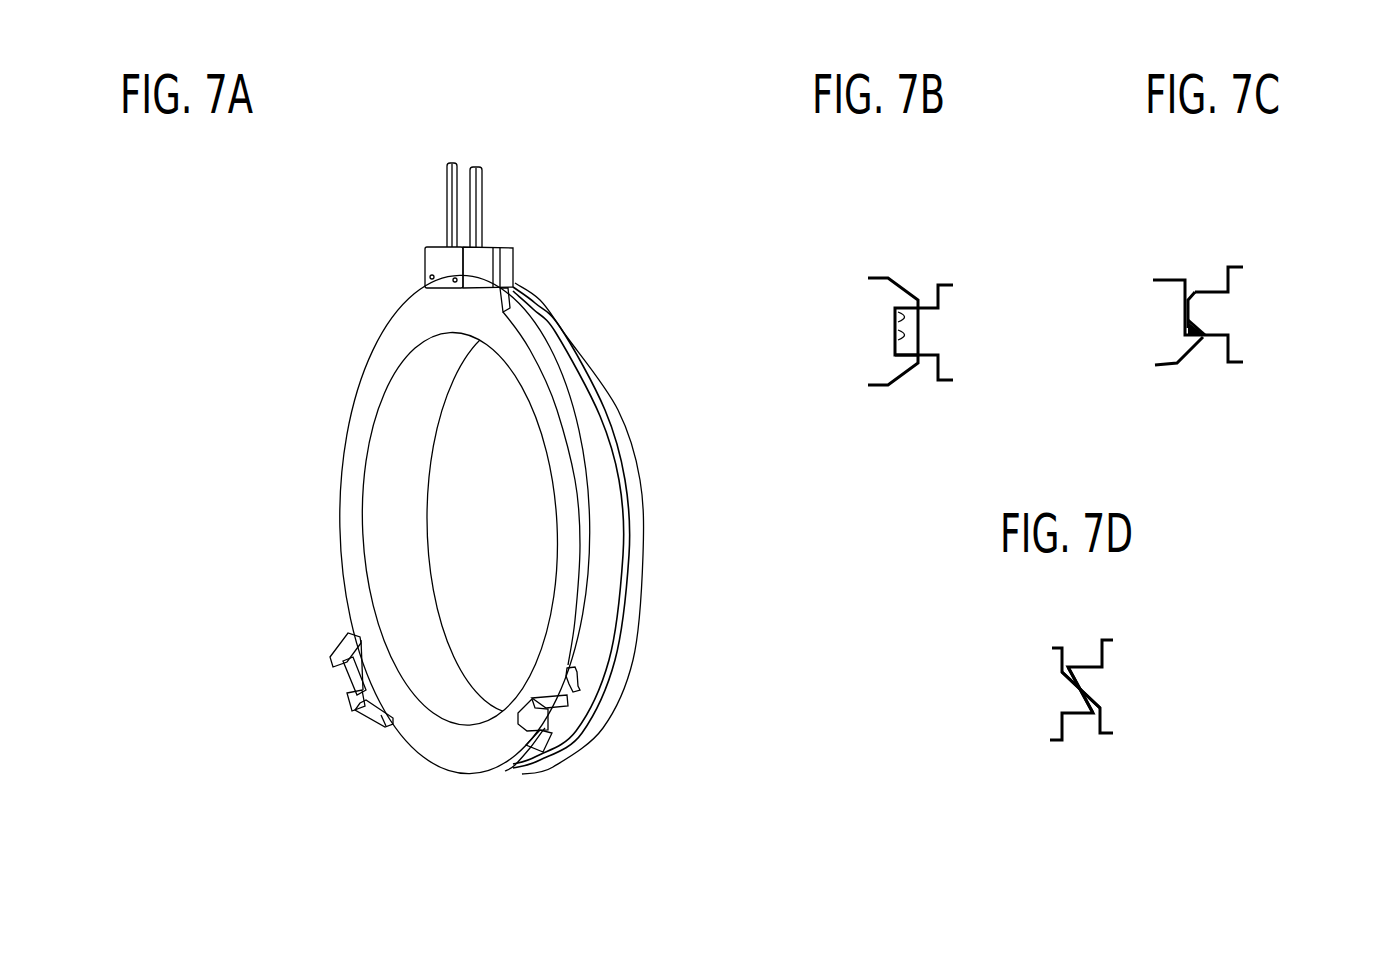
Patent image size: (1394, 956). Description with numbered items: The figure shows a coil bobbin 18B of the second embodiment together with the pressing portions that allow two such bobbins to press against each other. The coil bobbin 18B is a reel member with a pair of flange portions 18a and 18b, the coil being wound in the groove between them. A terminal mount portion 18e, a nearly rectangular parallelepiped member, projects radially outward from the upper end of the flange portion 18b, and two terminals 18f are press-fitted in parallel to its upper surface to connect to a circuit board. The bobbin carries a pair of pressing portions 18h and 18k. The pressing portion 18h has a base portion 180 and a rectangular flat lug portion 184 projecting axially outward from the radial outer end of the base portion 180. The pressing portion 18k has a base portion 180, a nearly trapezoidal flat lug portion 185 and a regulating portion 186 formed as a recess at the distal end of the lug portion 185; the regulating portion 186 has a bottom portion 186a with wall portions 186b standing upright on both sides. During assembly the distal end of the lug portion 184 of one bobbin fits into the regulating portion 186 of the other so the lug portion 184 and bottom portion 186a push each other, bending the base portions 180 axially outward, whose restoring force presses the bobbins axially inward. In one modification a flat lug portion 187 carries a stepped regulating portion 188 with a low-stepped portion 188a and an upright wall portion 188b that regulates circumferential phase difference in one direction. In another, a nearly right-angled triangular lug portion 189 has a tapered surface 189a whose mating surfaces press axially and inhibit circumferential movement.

In FIG. 7A, the coil bobbin 18B is at (354, 268).
In FIG. 7A, the flange portion 18b is at (377, 368).
In FIG. 7A, the flange portion 18a is at (622, 425).
In FIG. 7A, the terminal mount portion 18e is at (478, 270).
In FIG. 7A, the terminal 18f is at (483, 222).
In FIG. 7A, the pressing portion 18k is at (197, 597).
In FIG. 7A, the pressing portion 18h is at (693, 672).
In FIG. 7A, the regulating portion 186 is at (250, 595).
In FIG. 7A, the bottom portion 186a is at (341, 672).
In FIG. 7B, the bottom portion 186a is at (903, 327).
In FIG. 7A, the wall portion 186b is at (330, 661).
In FIG. 7B, the wall portion 186b is at (902, 317).
In FIG. 7A, the lug portion 185 is at (350, 683).
In FIG. 7B, the lug portion 185 is at (907, 370).
In FIG. 7A, the base portion 180 is at (357, 712).
In FIG. 7A, the lug portion 184 is at (542, 718).
In FIG. 7B, the lug portion 184 is at (877, 295).
In FIG. 7C, the lug portion 184 is at (1230, 317).
In FIG. 7C, the lug portion 187 is at (1170, 298).
In FIG. 7C, the regulating portion 188 is at (1323, 192).
In FIG. 7C, the low-stepped portion 188a is at (1187, 303).
In FIG. 7C, the wall portion 188b is at (1193, 327).
In FIG. 7D, the lug portion 189 is at (1068, 697).
In FIG. 7D, the tapered surface 189a is at (1073, 667).